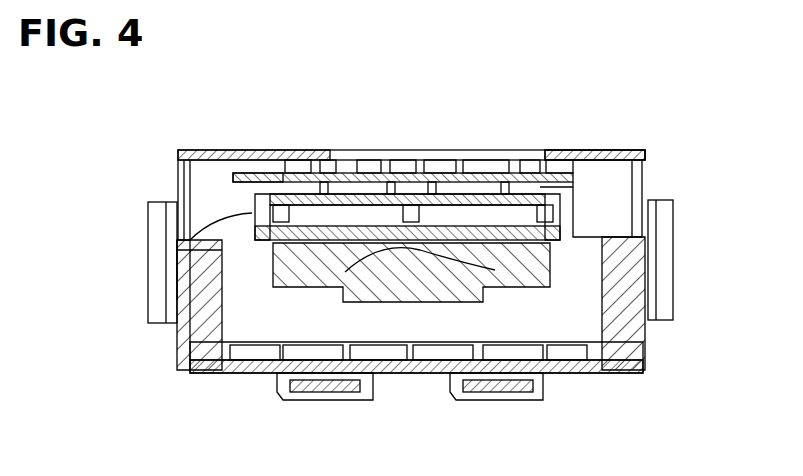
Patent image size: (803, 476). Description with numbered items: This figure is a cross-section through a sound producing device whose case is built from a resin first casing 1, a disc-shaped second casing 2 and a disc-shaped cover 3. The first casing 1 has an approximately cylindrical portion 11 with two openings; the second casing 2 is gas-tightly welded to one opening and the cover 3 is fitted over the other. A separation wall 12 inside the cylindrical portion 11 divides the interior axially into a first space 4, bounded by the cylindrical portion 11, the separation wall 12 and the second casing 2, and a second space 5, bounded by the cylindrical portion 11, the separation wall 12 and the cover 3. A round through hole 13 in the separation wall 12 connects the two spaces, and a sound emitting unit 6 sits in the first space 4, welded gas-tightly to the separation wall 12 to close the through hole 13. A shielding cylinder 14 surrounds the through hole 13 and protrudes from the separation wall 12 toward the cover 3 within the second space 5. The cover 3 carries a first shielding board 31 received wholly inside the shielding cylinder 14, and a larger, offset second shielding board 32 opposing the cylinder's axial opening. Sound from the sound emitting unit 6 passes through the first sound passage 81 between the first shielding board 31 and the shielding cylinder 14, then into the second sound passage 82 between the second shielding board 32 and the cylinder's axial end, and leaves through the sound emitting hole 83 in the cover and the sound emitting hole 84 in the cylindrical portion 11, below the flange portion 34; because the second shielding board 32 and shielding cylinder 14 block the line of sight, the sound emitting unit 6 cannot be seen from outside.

The first casing 1 is at (648, 328).
The second casing 2 is at (605, 373).
The cover 3 is at (213, 148).
The first space 4 is at (508, 318).
The second space 5 is at (178, 214).
The sound emitting unit 6 is at (434, 300).
The cylindrical portion 11 is at (662, 228).
The separation wall 12 is at (215, 284).
The through hole 13 is at (378, 262).
The shielding cylinder 14 is at (178, 252).
The first shielding board 31 is at (322, 182).
The second shielding board 32 is at (352, 172).
The flange portion 34 is at (612, 150).
The first sound passage 81 is at (580, 210).
The second sound passage 82 is at (632, 180).
The sound emitting hole 83 is at (255, 172).
The sound emitting hole 84 is at (178, 152).